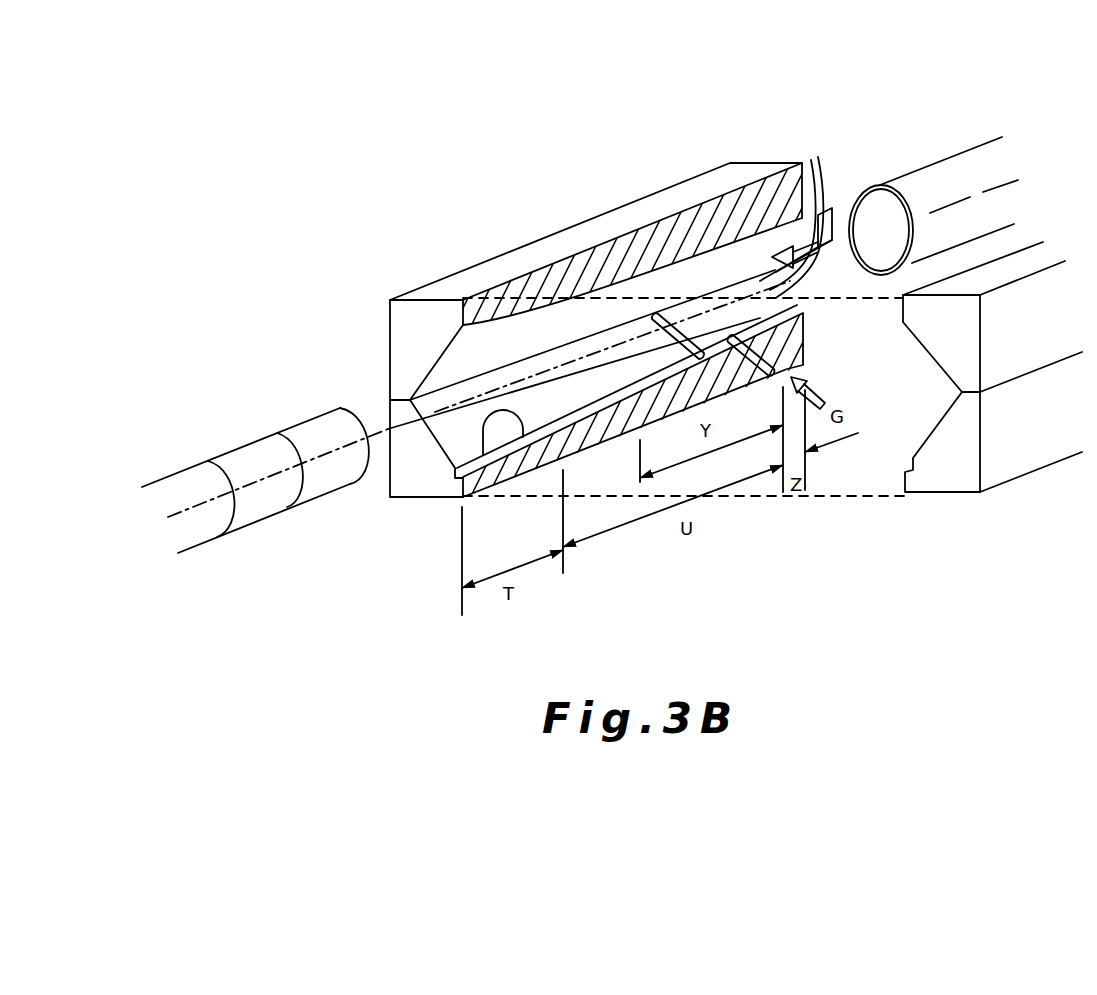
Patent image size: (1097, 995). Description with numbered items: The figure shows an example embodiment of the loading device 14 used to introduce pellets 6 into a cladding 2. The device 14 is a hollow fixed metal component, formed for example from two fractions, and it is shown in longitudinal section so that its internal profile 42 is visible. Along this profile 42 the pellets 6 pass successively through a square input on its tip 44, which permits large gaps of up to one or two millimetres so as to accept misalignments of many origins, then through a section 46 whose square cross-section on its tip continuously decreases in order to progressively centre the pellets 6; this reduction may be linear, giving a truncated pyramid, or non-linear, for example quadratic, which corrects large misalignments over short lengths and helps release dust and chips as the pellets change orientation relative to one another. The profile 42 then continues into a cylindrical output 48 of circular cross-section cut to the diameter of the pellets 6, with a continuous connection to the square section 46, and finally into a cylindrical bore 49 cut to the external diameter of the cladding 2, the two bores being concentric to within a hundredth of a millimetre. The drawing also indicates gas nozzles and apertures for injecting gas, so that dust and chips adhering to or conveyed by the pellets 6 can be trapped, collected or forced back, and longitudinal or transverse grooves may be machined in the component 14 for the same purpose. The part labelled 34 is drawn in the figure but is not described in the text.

The cladding 2 is at (972, 155).
The pellets 6 is at (333, 475).
The loading device 14 is at (500, 222).
The end plate 34 is at (842, 213).
The internal profile 42 is at (455, 432).
The square input on its tip 44 is at (526, 452).
The section with continuously reducing square cross-section on its tip 46 is at (554, 330).
The cylindrical output 48 is at (690, 316).
The cylindrical bore 49 is at (818, 157).